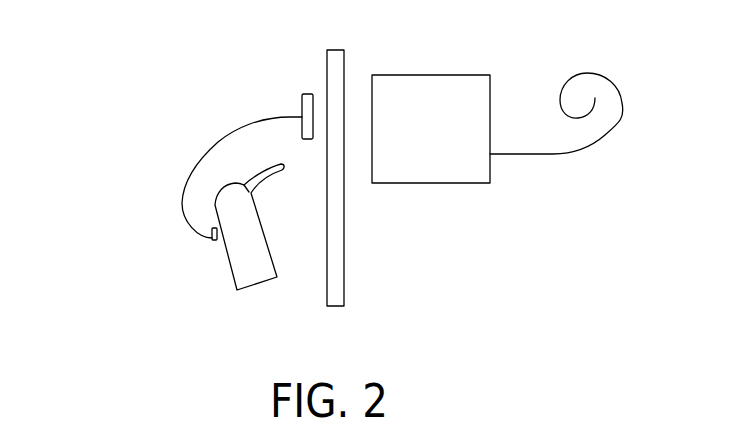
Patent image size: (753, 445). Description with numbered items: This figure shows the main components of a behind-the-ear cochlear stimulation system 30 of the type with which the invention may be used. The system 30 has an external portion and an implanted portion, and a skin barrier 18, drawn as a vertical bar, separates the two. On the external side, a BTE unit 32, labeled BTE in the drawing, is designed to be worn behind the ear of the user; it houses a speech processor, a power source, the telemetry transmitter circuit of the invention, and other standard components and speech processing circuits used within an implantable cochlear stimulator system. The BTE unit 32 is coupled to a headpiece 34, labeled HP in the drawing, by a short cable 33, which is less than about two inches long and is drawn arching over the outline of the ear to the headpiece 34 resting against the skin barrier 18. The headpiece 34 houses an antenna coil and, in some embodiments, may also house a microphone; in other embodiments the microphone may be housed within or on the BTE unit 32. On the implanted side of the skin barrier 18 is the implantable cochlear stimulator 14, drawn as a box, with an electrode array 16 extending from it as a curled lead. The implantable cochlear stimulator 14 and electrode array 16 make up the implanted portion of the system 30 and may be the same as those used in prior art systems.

The behind-the-ear cochlear stimulation system 30 is at (122, 133).
The BTE unit 32 is at (232, 283).
The short cable 33 is at (233, 130).
The headpiece 34 is at (301, 113).
The headpiece HP is at (298, 98).
The behind-the-ear unit BTE is at (222, 268).
The skin barrier 18 is at (345, 275).
The ICS 14 is at (465, 184).
The electrode array 16 is at (605, 142).